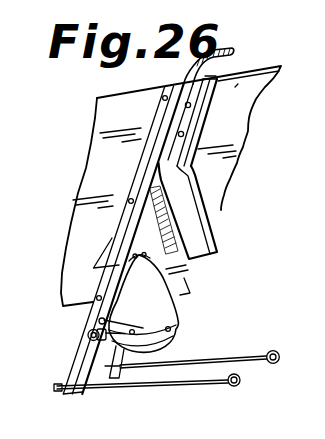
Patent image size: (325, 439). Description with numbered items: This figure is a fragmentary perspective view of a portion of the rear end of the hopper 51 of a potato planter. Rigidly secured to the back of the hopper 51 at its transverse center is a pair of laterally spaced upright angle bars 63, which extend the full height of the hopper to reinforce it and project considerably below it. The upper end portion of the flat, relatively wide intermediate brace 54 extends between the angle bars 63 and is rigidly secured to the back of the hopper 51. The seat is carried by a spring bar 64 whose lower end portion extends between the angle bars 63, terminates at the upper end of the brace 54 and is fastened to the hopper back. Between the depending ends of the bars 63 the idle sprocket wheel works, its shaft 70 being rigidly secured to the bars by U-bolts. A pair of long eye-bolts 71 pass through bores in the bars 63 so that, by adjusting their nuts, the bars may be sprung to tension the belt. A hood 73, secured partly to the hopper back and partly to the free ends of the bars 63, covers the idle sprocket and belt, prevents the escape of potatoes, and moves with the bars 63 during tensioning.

The hopper 51 is at (238, 86).
The upright angle bars 63 is at (138, 141).
The spring bar 64 is at (226, 46).
The intermediate brace 54 is at (196, 229).
The hood 73 is at (159, 298).
The shaft 70 is at (75, 331).
The eye-bolts 71 is at (195, 352).